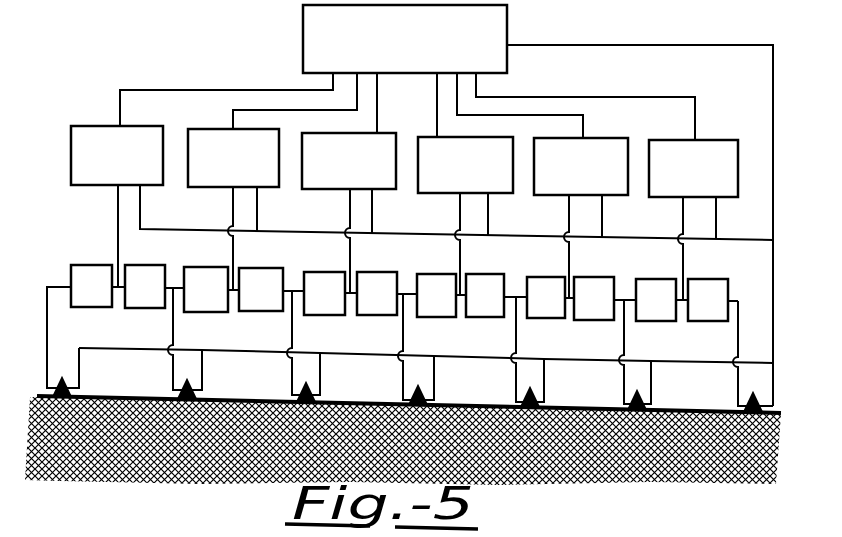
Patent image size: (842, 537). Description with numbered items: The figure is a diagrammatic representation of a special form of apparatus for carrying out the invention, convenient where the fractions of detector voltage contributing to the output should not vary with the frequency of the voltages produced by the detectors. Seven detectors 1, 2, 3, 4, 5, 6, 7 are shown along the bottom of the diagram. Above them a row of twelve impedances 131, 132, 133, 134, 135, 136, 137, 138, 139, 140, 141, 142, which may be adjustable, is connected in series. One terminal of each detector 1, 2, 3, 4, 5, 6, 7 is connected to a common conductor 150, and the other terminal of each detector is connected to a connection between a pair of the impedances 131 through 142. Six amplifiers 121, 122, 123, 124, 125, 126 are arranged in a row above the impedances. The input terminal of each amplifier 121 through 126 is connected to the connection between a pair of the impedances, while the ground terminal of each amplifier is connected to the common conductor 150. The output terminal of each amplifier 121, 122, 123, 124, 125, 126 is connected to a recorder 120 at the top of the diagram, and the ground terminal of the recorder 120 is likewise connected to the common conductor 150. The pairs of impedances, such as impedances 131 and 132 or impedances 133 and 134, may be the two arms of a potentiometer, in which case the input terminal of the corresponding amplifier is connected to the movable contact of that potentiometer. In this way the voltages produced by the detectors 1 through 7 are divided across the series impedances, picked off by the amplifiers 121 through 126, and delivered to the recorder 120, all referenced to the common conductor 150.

The recorder 120 is at (405, 39).
The amplifier 121 is at (117, 155).
The amplifier 122 is at (233, 158).
The amplifier 123 is at (349, 161).
The amplifier 124 is at (465, 165).
The amplifier 125 is at (581, 166).
The amplifier 126 is at (693, 168).
The impedance 131 is at (91, 287).
The impedance 132 is at (145, 287).
The impedance 133 is at (206, 290).
The impedance 134 is at (261, 290).
The impedance 135 is at (324, 294).
The impedance 136 is at (377, 294).
The impedance 137 is at (436, 296).
The impedance 138 is at (485, 296).
The impedance 139 is at (546, 299).
The impedance 140 is at (594, 299).
The impedance 141 is at (656, 301).
The impedance 142 is at (708, 301).
The common conductor 150 is at (770, 239).
The detector 1 is at (60, 375).
The detector 2 is at (183, 377).
The detector 3 is at (301, 380).
The detector 4 is at (413, 382).
The detector 5 is at (526, 385).
The detector 6 is at (633, 387).
The detector 7 is at (753, 389).